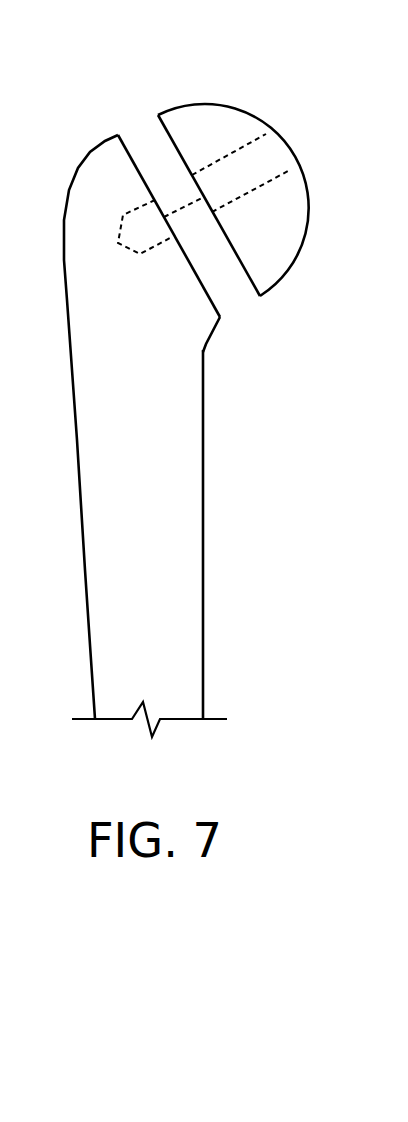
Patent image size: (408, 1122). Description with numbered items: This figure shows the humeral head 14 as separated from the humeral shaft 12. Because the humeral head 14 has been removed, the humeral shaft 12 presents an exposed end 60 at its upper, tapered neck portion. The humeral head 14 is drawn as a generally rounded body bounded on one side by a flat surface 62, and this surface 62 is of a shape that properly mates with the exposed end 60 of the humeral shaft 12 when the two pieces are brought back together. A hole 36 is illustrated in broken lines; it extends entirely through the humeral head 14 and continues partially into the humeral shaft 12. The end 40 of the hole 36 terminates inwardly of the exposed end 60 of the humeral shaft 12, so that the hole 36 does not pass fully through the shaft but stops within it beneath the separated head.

The humeral shaft 12 is at (192, 353).
The humeral head 14 is at (228, 128).
The hole 36 is at (273, 157).
The end of the hole 40 is at (140, 255).
The exposed end 60 is at (212, 295).
The surface of the humeral head 62 is at (160, 133).